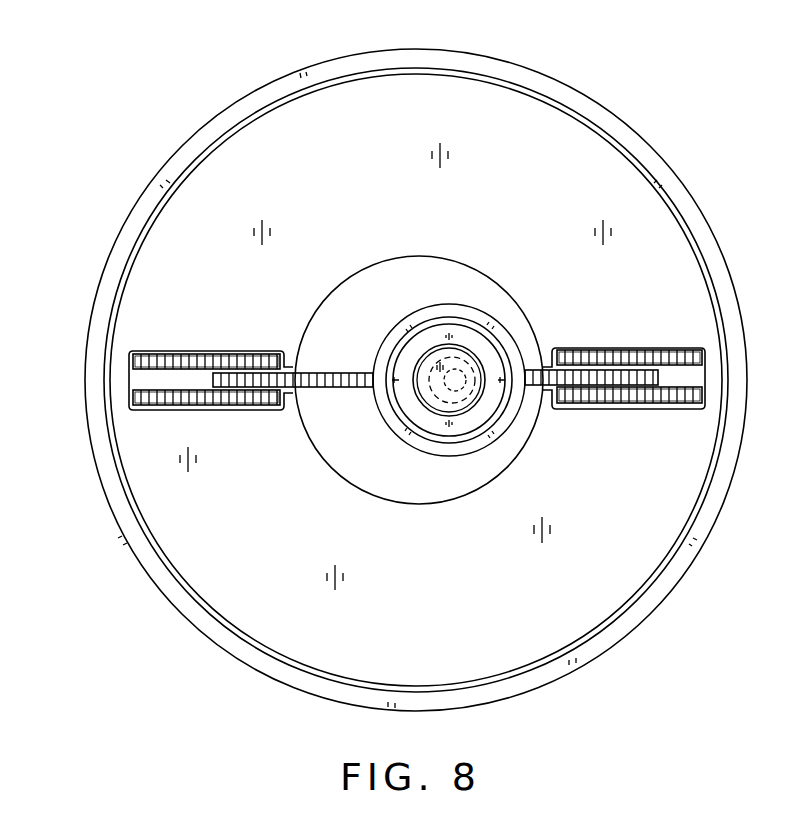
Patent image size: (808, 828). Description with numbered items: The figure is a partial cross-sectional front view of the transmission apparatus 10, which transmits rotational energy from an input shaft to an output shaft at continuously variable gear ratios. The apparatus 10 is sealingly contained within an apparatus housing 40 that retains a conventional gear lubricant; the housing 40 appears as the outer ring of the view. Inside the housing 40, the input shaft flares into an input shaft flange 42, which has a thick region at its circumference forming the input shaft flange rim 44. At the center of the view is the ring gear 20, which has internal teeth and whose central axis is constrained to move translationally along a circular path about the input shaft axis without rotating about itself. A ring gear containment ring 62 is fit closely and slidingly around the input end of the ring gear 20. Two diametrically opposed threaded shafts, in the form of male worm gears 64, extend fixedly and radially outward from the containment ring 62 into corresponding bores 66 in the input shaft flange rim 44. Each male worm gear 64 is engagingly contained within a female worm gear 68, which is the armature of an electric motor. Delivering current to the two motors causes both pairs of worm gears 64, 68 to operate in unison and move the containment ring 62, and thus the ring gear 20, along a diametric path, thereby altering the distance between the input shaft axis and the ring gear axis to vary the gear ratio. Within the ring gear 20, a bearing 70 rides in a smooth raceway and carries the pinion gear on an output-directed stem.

The transmission apparatus 10 is at (650, 92).
The apparatus housing 40 is at (124, 243).
The input shaft flange rim 44 is at (389, 192).
The input shaft flange 42 is at (361, 293).
The bores 66 is at (155, 380).
The female worm gears 68 is at (193, 356).
The male worm gears 64 is at (255, 378).
The ring gear containment ring 62 is at (443, 454).
The ring gear 20 is at (482, 413).
The bearing 70 is at (432, 395).